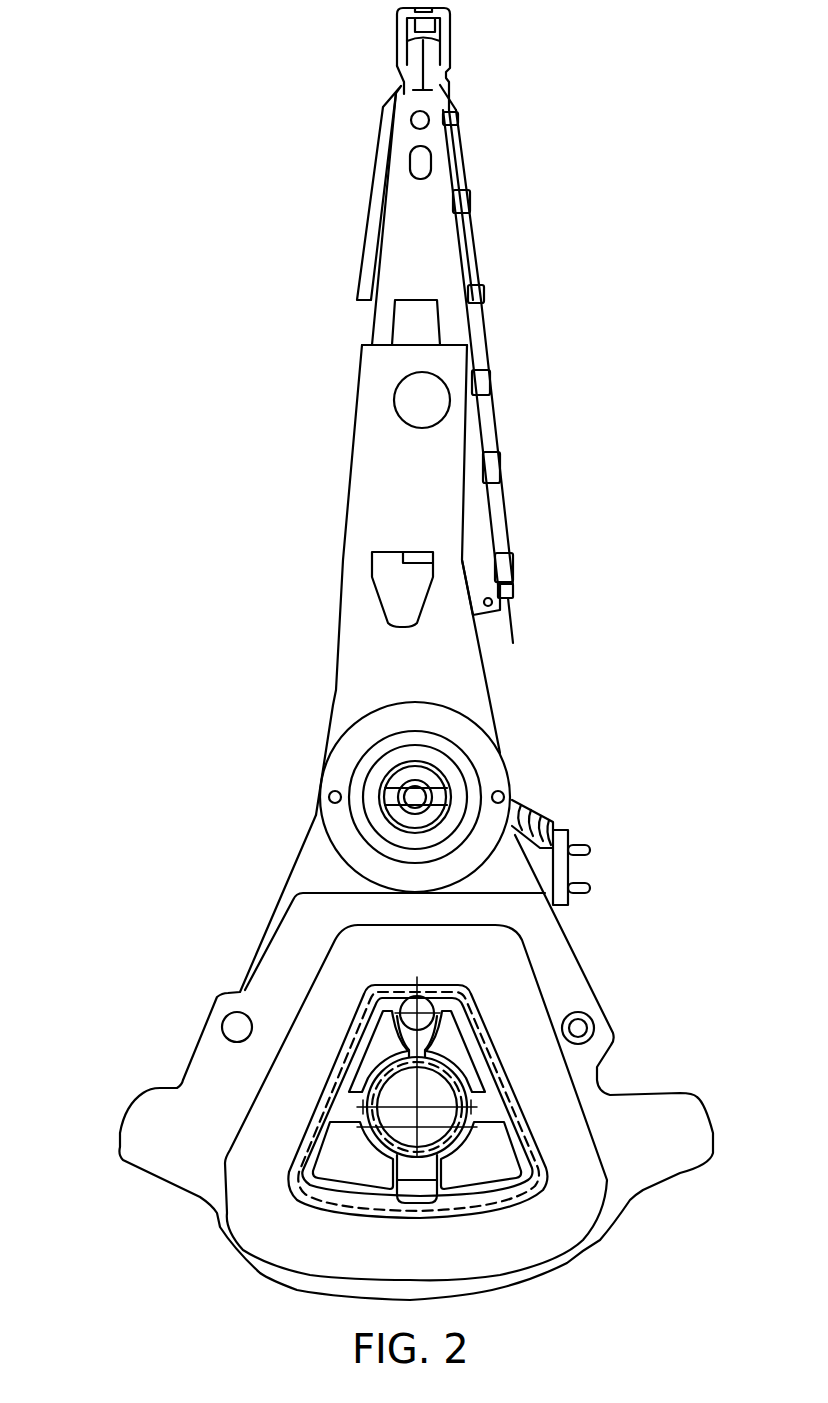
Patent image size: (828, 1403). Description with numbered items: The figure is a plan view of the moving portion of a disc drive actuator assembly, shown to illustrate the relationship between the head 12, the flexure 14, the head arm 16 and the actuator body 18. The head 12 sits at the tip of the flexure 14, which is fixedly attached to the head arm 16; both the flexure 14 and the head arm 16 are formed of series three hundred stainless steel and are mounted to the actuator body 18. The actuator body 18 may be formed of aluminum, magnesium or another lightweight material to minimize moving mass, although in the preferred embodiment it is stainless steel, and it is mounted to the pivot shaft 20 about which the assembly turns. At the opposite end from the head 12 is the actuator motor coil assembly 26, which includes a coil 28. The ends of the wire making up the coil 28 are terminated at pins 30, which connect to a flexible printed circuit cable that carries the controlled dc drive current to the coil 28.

The head 12 is at (437, 31).
The flexure 14 is at (433, 240).
The head arm 16 is at (427, 472).
The actuator body 18 is at (490, 760).
The pivot shaft 20 is at (402, 777).
The actuator motor coil assembly 26 is at (120, 893).
The coil 28 is at (525, 1008).
The pins 30 is at (595, 848).